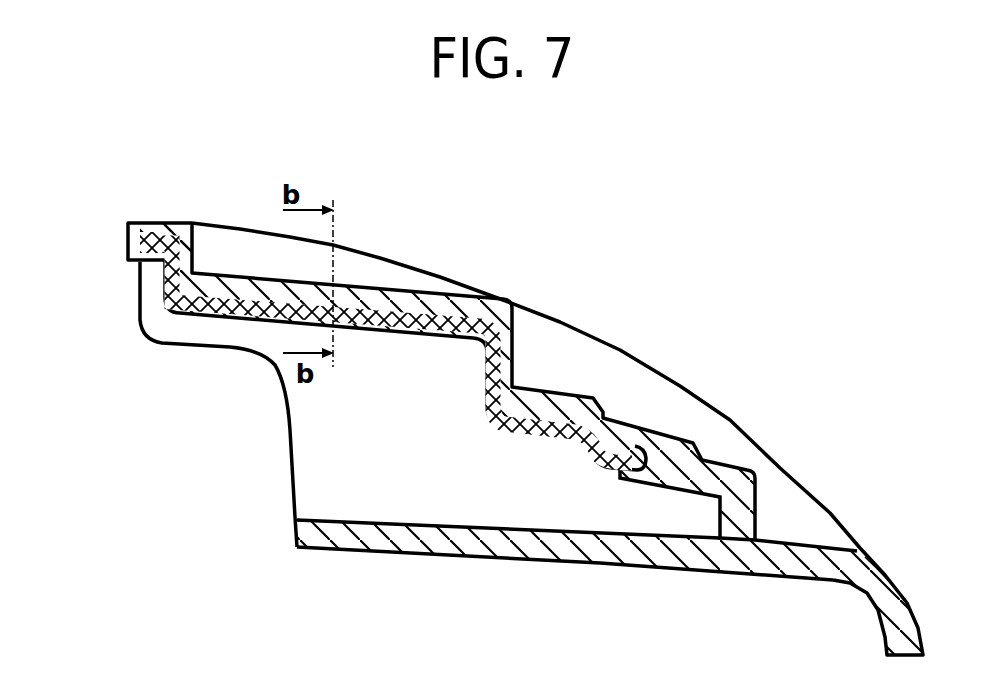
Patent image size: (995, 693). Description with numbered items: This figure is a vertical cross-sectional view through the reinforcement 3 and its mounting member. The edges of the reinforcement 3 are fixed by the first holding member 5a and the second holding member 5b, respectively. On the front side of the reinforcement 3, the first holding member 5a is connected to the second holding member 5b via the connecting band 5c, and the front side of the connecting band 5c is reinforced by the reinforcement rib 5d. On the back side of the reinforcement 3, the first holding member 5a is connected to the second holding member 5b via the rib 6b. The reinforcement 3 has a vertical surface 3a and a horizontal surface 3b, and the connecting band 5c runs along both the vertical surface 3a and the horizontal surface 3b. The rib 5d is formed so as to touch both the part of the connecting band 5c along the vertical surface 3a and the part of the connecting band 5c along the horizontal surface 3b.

The reinforcement 3 is at (486, 378).
The vertical surface 3a is at (198, 256).
The horizontal surface 3b is at (165, 225).
The first holding member 5a is at (660, 440).
The second holding member 5b is at (145, 243).
The connecting band 5c is at (512, 305).
The reinforcement rib 5d is at (660, 407).
The rib 6b is at (306, 428).